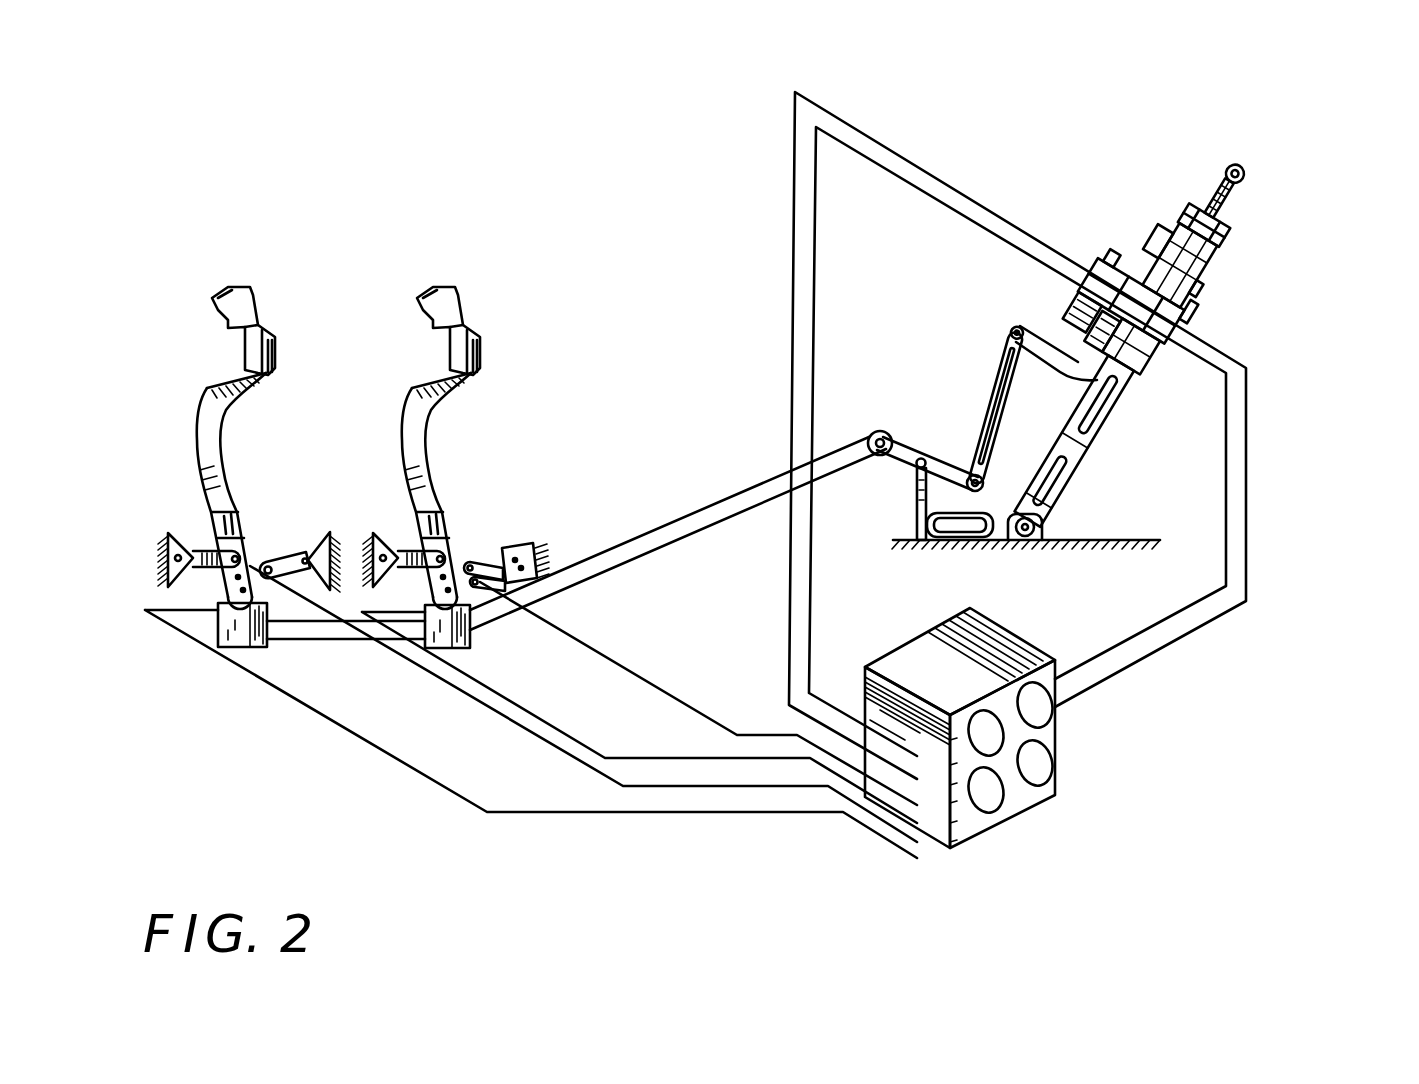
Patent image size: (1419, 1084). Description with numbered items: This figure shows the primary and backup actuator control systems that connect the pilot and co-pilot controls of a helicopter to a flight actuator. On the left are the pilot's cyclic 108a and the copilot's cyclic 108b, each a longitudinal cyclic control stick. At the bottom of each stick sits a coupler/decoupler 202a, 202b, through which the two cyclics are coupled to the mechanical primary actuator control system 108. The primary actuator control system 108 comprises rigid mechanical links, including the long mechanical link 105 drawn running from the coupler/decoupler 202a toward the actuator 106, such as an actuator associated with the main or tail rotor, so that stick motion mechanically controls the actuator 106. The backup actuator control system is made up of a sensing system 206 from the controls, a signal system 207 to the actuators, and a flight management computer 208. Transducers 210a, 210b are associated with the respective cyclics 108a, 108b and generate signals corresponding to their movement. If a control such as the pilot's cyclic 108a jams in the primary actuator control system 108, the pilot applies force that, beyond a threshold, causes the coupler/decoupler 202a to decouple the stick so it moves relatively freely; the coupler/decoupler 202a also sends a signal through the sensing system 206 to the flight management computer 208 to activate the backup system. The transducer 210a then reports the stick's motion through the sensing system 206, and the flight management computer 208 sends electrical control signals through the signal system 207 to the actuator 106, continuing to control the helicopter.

The copilot's longitudinal cyclic control 108b is at (218, 387).
The pilot's longitudinal cyclic control 108a is at (415, 388).
The transducer 210b is at (277, 560).
The transducer 210a is at (490, 560).
The coupler/decoupler 202b is at (218, 606).
The coupler/decoupler 202a is at (472, 649).
The primary actuator control system 108 is at (318, 642).
The mechanical link 105 is at (638, 538).
The actuator 106 is at (1220, 252).
The signal system 207 is at (1265, 488).
The sensing system 206 is at (332, 737).
The flight management computer 208 is at (1058, 787).